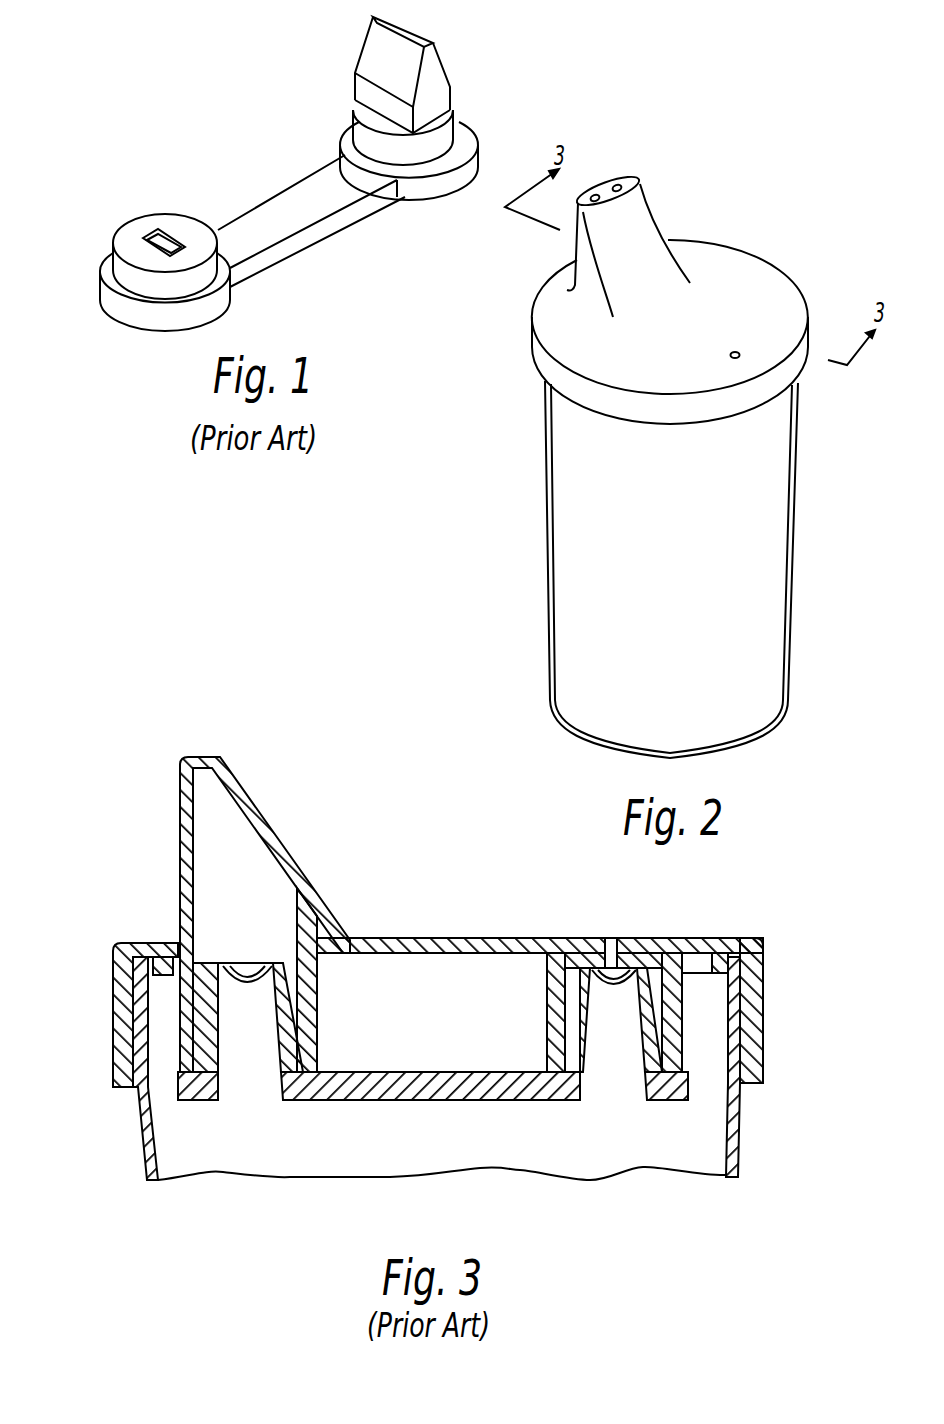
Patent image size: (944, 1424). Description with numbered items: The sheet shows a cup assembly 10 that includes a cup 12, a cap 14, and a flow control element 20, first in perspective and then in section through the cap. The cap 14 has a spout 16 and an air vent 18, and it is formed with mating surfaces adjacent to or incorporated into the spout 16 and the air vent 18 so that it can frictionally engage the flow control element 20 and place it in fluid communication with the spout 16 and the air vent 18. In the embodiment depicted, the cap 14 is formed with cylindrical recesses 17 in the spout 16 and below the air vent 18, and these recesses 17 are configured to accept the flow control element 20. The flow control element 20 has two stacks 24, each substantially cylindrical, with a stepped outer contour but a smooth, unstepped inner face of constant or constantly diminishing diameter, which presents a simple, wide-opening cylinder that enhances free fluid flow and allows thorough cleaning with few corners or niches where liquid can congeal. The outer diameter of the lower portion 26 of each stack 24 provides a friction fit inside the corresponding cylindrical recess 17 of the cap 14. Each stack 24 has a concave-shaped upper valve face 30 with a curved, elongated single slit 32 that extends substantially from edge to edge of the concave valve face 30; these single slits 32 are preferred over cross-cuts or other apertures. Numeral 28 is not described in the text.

In FIG. 2, the cup assembly 10 is at (651, 457).
In FIG. 3, the cup assembly 10 is at (433, 968).
In FIG. 2, the cup 12 is at (760, 565).
In FIG. 3, the cup 12 is at (753, 1117).
In FIG. 2, the cap 14 is at (540, 288).
In FIG. 3, the cap 14 is at (765, 1030).
In FIG. 2, the spout 16 is at (647, 213).
In FIG. 3, the spout 16 is at (178, 807).
In FIG. 3, the cylindrical recesses 17 is at (320, 1002).
In FIG. 2, the air vent 18 is at (740, 353).
In FIG. 3, the air vent 18 is at (605, 950).
In FIG. 3, the flow control element 20 is at (462, 1100).
In FIG. 3, the stack 24 is at (205, 992).
In FIG. 3, the lower portion 26 is at (302, 1035).
In FIG. 3, the valve stem wall 28 is at (288, 970).
In FIG. 3, the upper valve face 30 is at (250, 967).
In FIG. 3, the slits 32 is at (237, 987).